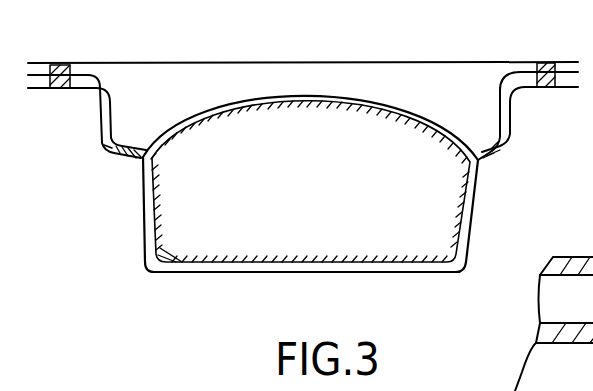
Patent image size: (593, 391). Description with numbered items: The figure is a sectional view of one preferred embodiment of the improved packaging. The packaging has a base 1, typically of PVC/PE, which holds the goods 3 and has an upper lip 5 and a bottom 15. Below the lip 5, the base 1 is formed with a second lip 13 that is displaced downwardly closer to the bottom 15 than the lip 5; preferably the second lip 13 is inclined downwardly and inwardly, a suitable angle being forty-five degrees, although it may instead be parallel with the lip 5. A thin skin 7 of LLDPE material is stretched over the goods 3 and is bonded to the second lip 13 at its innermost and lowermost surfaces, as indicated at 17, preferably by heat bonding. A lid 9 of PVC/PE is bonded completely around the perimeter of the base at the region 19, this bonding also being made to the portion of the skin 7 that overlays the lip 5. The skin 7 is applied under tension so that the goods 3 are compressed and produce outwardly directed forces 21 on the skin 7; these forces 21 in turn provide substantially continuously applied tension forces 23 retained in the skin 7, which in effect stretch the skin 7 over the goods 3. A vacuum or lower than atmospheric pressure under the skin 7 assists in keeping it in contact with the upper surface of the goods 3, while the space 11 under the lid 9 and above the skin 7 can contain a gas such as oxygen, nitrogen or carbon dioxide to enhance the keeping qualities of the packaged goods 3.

The base 1 is at (466, 240).
The goods 3 is at (318, 228).
The lip 5 is at (572, 90).
The skin 7 is at (390, 108).
The lid 9 is at (155, 63).
The space 11 is at (220, 88).
The second lip 13 is at (116, 150).
The bottom 15 is at (370, 275).
The bonding of skin to second lip 17 is at (122, 160).
The bonding region 19 is at (60, 64).
The outwardly directed forces 21 is at (208, 145).
The tension forces 23 is at (170, 103).